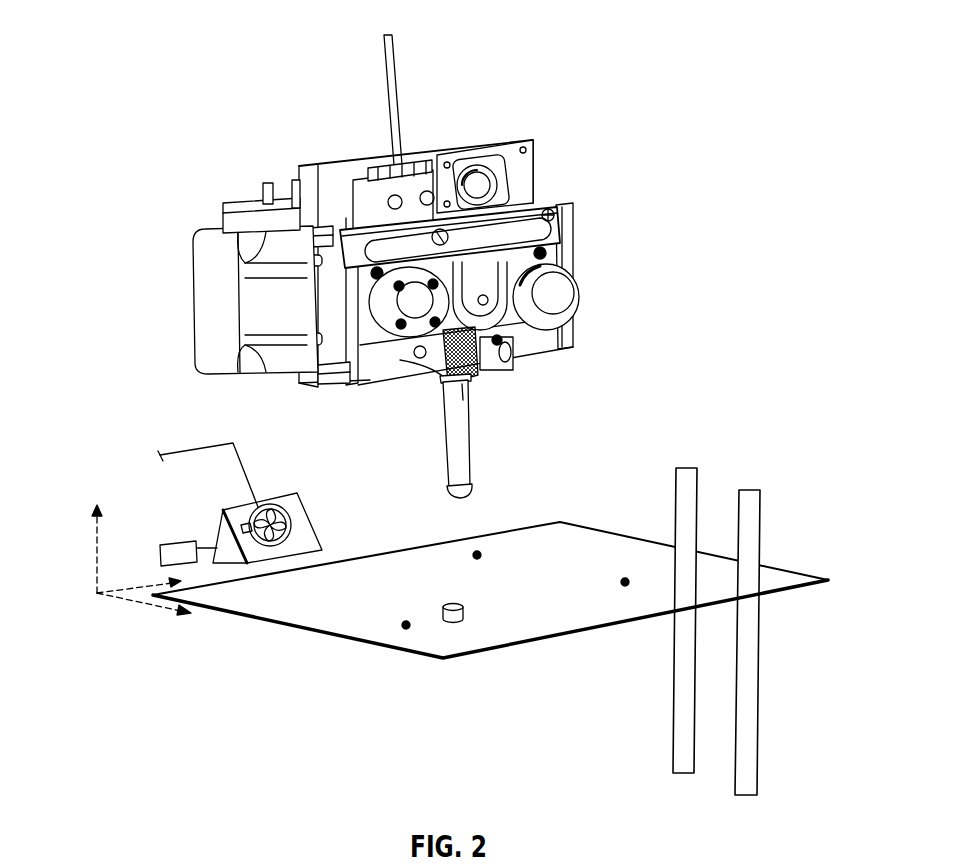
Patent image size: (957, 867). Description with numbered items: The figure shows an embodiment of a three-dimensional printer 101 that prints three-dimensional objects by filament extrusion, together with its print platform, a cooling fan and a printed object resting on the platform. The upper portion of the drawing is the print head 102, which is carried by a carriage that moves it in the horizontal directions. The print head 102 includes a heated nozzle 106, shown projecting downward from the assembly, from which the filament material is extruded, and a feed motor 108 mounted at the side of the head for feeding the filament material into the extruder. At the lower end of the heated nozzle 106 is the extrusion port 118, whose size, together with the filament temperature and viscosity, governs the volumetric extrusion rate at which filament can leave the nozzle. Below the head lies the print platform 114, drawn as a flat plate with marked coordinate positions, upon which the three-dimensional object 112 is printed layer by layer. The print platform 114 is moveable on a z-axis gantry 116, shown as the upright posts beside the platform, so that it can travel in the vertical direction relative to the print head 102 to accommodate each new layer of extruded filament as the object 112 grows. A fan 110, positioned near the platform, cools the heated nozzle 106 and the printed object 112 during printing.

The 3D printer 101 is at (672, 76).
The print head 102 is at (526, 134).
The heated nozzle 106 is at (468, 438).
The feed motor 108 is at (217, 231).
The fan 110 is at (301, 520).
The 3D object 112 is at (463, 610).
The print platform 114 is at (304, 638).
The z-axis gantry 116 is at (689, 482).
The extrusion port 118 is at (460, 497).